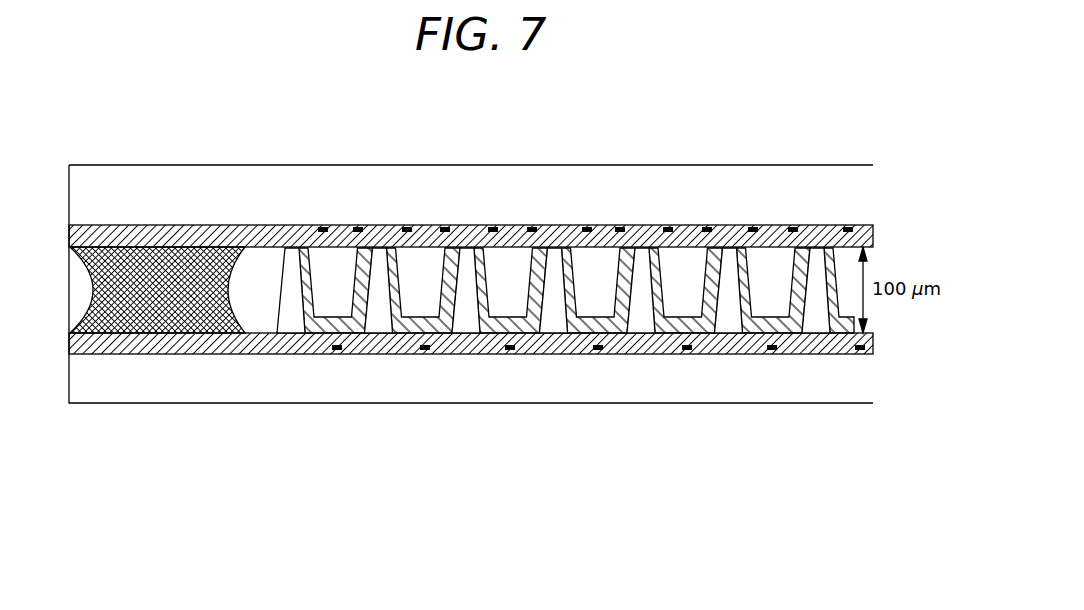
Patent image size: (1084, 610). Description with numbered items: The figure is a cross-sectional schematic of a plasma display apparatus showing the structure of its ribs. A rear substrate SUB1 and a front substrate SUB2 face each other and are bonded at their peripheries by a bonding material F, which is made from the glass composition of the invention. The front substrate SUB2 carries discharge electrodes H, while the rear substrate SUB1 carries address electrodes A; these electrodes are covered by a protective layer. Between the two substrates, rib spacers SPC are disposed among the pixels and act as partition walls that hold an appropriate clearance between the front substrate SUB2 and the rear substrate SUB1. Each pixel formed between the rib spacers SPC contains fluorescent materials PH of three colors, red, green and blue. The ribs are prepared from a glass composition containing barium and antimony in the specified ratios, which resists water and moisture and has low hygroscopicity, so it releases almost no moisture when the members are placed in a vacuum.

The front substrate SUB2 is at (365, 192).
The discharge electrodes H is at (492, 225).
The bonding material F is at (128, 317).
The rear substrate SUB1 is at (252, 383).
The rib spacers SPC is at (378, 322).
The address electrodes A is at (508, 355).
The fluorescent materials PH is at (668, 322).